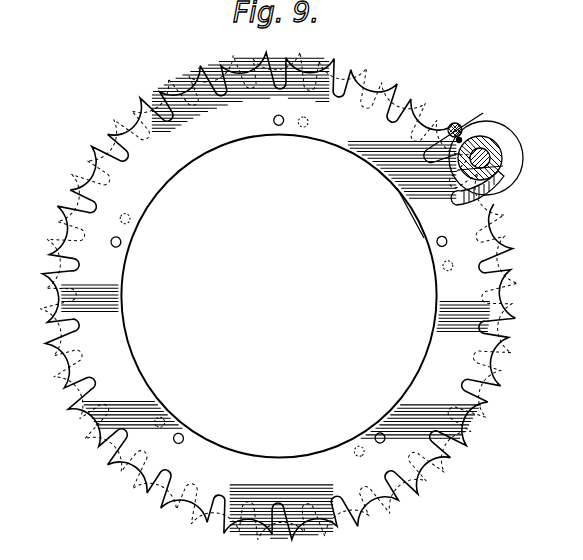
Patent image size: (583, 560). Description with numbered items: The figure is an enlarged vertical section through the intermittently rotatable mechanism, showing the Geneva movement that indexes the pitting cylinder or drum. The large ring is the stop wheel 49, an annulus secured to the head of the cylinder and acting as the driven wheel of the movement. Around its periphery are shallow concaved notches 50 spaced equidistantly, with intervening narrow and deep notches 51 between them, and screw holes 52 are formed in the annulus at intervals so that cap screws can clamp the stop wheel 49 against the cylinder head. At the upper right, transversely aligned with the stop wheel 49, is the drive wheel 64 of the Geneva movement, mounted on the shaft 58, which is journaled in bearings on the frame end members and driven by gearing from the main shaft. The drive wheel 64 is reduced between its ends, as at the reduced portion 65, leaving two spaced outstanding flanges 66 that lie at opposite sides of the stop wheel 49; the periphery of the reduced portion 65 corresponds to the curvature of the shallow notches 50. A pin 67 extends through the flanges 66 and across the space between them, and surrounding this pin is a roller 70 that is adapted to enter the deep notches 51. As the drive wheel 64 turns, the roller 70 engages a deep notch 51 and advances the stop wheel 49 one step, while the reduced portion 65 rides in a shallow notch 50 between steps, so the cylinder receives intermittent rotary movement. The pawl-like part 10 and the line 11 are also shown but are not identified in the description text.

The stop wheel 49 is at (200, 500).
The shallow concaved notches 50 is at (180, 90).
The narrow and deep notches 51 is at (208, 73).
The screw holes 52 is at (121, 243).
The pawl 10 is at (448, 122).
The plate 11 is at (500, 140).
The shaft 58 is at (490, 157).
The drive wheel 64 is at (490, 121).
The reduced portion 65 is at (507, 168).
The outstanding flanges 66 is at (518, 140).
The pin 67 is at (456, 123).
The roller 70 is at (461, 137).